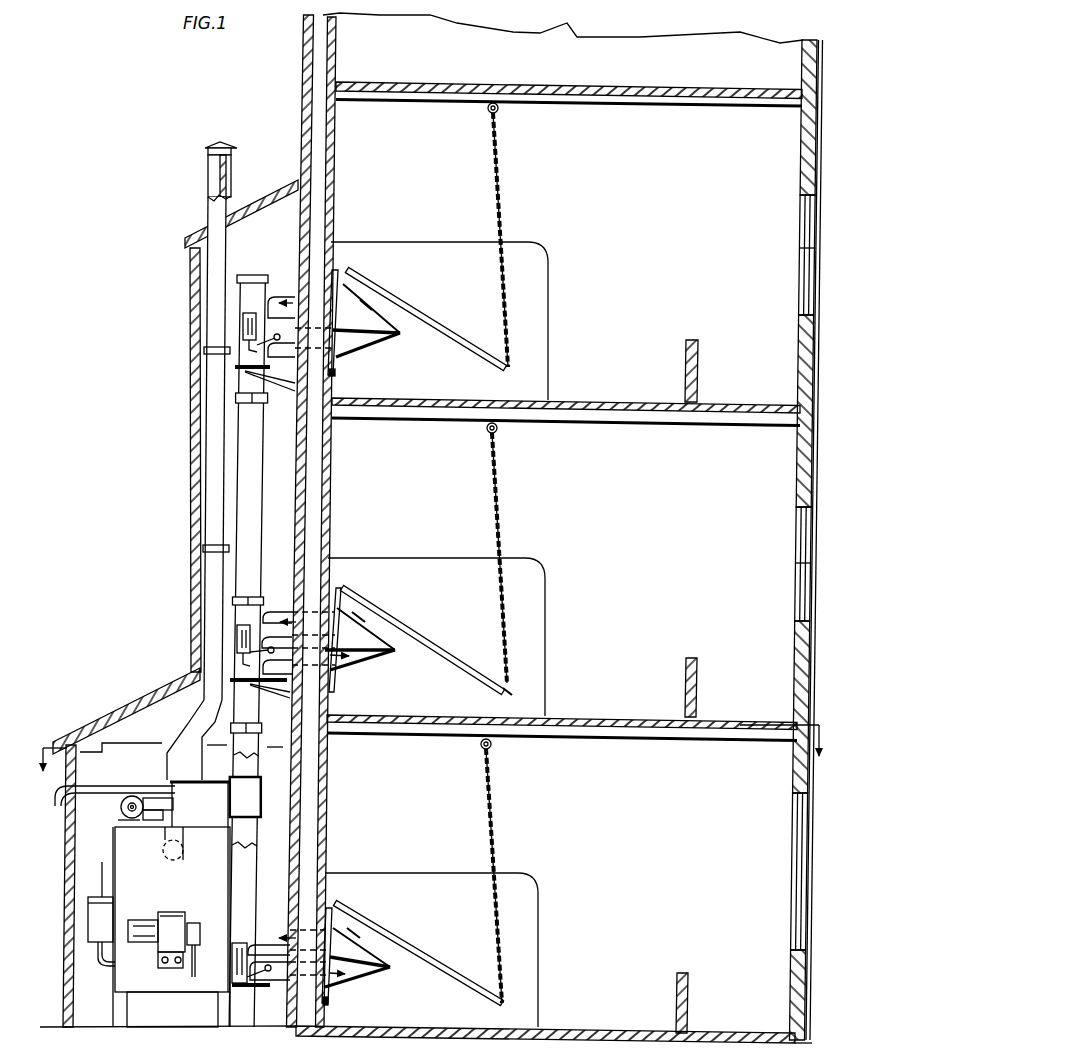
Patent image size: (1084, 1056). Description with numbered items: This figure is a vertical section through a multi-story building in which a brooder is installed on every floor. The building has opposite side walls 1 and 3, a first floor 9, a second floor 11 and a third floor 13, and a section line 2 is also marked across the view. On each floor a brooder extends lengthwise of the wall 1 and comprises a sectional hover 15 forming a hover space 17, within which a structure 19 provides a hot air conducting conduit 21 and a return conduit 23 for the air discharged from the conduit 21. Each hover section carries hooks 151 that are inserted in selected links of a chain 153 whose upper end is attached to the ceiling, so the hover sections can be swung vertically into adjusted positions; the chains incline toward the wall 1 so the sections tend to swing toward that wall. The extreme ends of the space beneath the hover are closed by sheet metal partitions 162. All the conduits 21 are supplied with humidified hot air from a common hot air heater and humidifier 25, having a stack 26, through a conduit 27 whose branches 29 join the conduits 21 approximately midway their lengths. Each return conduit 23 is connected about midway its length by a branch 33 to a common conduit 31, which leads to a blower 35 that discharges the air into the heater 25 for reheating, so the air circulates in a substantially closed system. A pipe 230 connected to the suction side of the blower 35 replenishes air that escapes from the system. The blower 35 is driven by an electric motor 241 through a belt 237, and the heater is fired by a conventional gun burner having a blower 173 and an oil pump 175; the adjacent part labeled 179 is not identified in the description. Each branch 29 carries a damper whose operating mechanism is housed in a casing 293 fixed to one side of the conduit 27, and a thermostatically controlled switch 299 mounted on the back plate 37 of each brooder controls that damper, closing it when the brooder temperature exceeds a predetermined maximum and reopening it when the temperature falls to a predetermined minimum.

The side wall 1 is at (298, 67).
The section line 2- 2 is at (427, 760).
The side wall 3 is at (801, 137).
The first floor 9 is at (588, 1028).
The second floor 11 is at (584, 721).
The third floor 13 is at (583, 401).
The sectional hover 15 is at (470, 342).
The hover space 17 is at (468, 368).
The structure 19 is at (402, 316).
The hot air conducting conduit 21 is at (354, 344).
The return conduit 23 is at (384, 320).
The hot air heater and humidifier 25 is at (118, 843).
The stack 26 is at (213, 481).
The conduit 27 is at (266, 551).
The branch conduit 29 is at (278, 372).
The common conduit 31 is at (263, 766).
The branch 33 is at (284, 297).
The blower 35 is at (212, 808).
The back plate 37 is at (364, 318).
The hooks 151 is at (506, 697).
The chain 153 is at (506, 491).
The sheet metal partitions 162 is at (551, 278).
The blower 173 is at (187, 858).
The oil pump 175 is at (182, 928).
The fuel supply pipe 179 is at (119, 916).
The pipe 230 is at (88, 788).
The belt 237 is at (153, 823).
The electric motor 241 is at (121, 807).
The casing 293 is at (243, 327).
The thermostatically controlled switch 299 is at (360, 696).